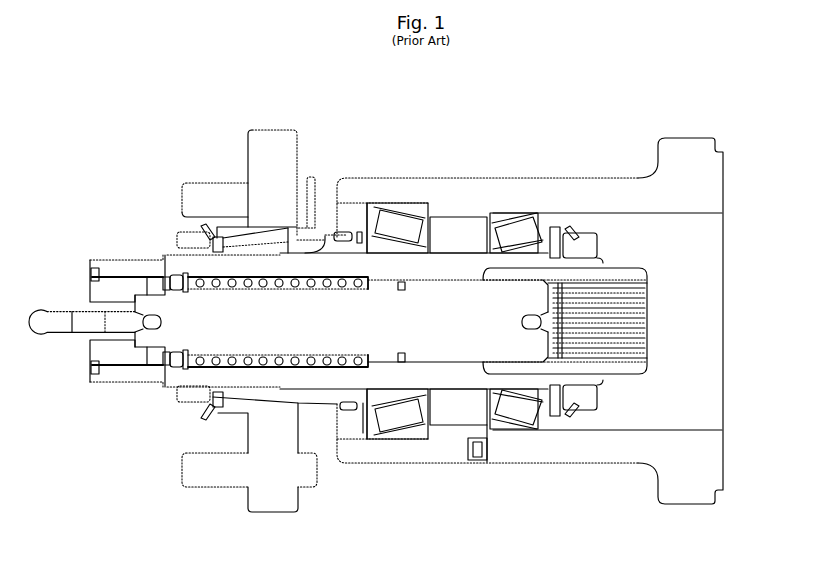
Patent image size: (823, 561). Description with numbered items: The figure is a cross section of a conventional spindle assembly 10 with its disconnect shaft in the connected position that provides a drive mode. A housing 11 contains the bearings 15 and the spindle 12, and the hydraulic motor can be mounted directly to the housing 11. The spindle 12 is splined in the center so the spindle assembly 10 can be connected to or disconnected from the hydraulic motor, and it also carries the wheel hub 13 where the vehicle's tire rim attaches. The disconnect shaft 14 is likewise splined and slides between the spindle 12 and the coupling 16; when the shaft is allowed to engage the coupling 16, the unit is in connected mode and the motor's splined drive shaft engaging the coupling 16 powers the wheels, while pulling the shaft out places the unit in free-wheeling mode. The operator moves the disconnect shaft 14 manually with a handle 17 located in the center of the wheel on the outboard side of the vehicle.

The spindle assembly 10 is at (230, 158).
The housing 11 is at (610, 185).
The spindle 12 is at (325, 247).
The wheel hub 13 is at (272, 148).
The disconnect shaft 14 is at (455, 297).
The bearings 15 is at (505, 422).
The coupling 16 is at (632, 372).
The handle 17 is at (59, 318).